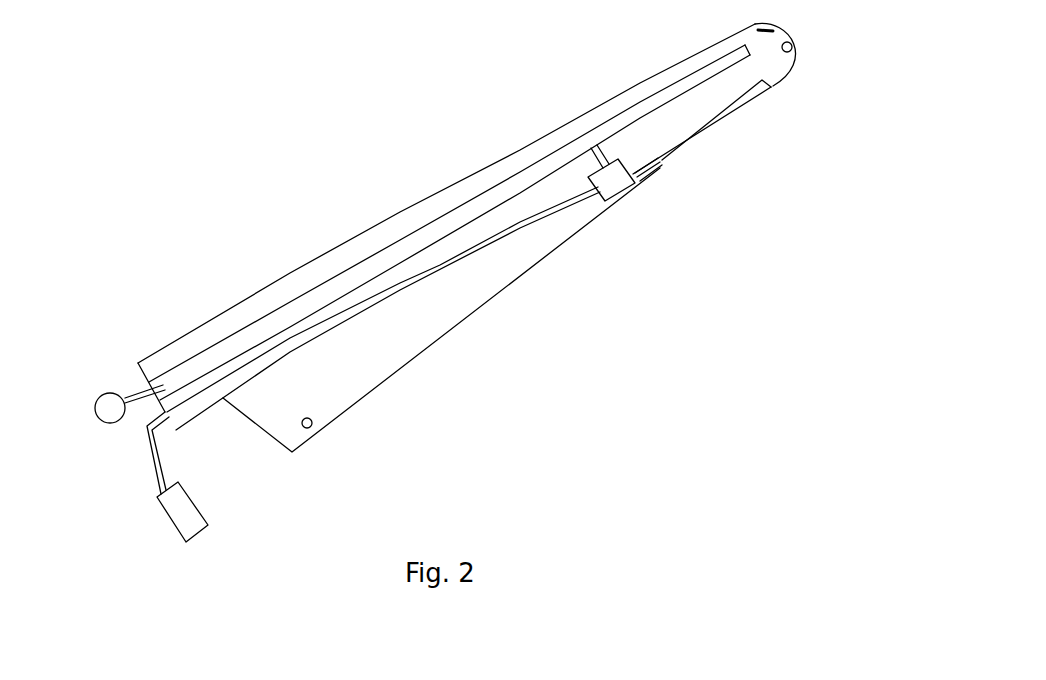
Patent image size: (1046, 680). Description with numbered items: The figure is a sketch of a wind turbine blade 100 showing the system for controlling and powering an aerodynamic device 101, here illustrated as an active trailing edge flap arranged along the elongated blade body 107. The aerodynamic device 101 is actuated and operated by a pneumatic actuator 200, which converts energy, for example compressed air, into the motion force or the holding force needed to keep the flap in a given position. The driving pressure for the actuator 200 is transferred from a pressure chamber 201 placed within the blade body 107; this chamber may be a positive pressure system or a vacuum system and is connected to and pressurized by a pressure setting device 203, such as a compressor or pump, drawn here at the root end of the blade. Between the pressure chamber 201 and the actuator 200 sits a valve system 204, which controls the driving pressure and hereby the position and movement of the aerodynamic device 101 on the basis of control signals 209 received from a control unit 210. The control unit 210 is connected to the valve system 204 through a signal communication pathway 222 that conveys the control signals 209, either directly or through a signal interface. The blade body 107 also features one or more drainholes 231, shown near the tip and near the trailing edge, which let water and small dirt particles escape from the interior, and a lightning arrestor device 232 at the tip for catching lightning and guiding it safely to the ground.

The wind turbine blade 100 is at (330, 226).
The aerodynamic device 101 is at (690, 142).
The blade body 107 is at (705, 107).
The pneumatic actuator 200 is at (647, 170).
The pressure chamber 201 is at (562, 150).
The pressure setting device 203 is at (108, 398).
The valve system 204 is at (605, 188).
The control signals 209 is at (548, 215).
The signal communication pathway 222 is at (441, 310).
The control unit 210 is at (188, 514).
The drainholes 231 is at (792, 53).
The lightning arrestor device 232 is at (757, 28).